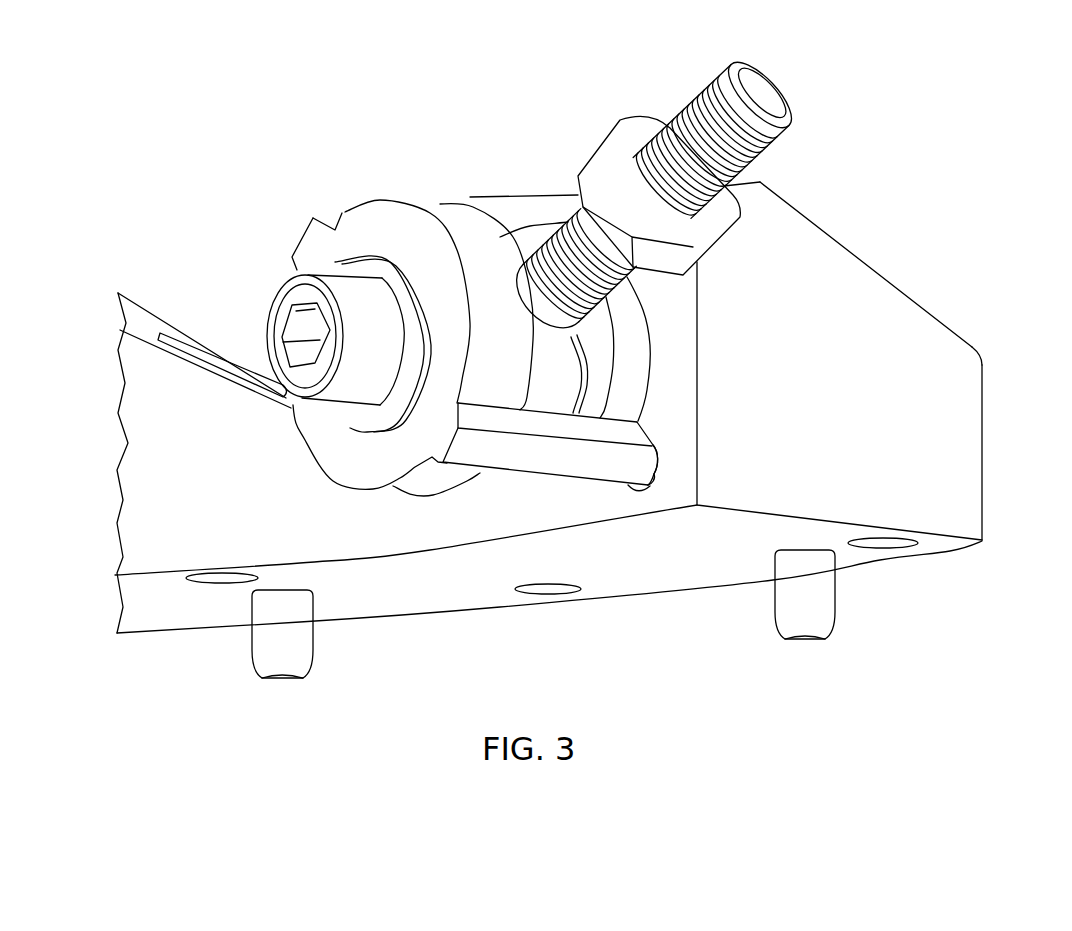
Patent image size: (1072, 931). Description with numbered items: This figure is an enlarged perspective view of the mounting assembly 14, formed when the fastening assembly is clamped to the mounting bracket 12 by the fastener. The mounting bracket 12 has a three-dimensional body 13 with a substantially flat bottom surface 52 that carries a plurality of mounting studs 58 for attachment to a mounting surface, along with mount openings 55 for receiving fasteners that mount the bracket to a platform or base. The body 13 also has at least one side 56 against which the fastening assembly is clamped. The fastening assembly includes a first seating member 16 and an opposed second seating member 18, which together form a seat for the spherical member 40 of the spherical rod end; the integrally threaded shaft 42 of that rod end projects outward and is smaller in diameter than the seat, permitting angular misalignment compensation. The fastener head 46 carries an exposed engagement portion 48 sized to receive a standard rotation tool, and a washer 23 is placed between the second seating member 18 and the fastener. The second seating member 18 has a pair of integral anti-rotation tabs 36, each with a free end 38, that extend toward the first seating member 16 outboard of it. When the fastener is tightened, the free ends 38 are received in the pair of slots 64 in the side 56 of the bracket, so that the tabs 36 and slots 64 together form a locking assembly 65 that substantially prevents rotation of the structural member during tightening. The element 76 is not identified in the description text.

The mounting bracket 12 is at (986, 524).
The three-dimensional body 13 is at (872, 265).
The mounting assembly 14 is at (386, 696).
The first seating member 16 is at (595, 360).
The second seating member 18 is at (448, 206).
The washer 23 is at (364, 415).
The anti-rotation tabs 36 is at (326, 222).
The free end 38 is at (643, 487).
The spherical member 40 is at (540, 402).
The integrally threaded shaft 42 is at (740, 72).
The head 46 is at (358, 284).
The engagement portion 48 is at (292, 326).
The bottom surface 52 is at (386, 608).
The mount openings 55 is at (223, 583).
The side 56 is at (920, 323).
The mounting studs 58 is at (283, 682).
The slots 64 is at (655, 484).
The locking assembly 65 is at (656, 448).
The hex nut 76 is at (626, 120).